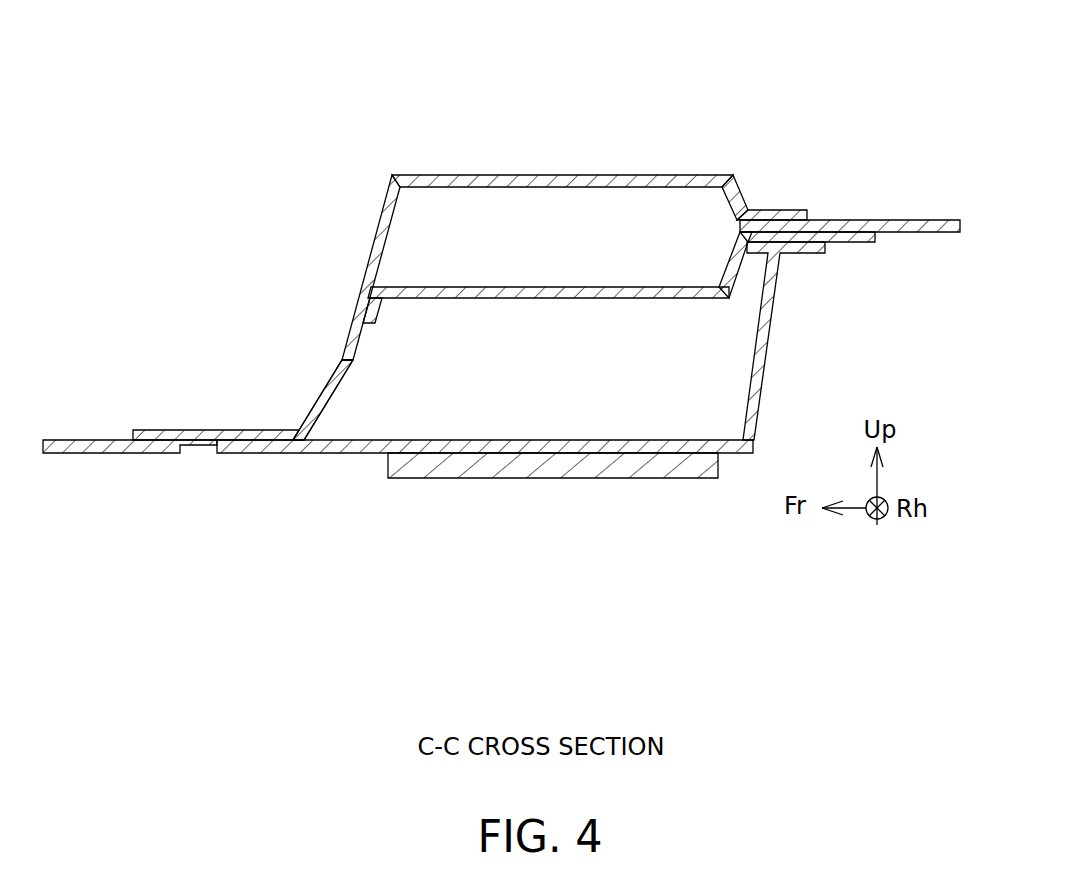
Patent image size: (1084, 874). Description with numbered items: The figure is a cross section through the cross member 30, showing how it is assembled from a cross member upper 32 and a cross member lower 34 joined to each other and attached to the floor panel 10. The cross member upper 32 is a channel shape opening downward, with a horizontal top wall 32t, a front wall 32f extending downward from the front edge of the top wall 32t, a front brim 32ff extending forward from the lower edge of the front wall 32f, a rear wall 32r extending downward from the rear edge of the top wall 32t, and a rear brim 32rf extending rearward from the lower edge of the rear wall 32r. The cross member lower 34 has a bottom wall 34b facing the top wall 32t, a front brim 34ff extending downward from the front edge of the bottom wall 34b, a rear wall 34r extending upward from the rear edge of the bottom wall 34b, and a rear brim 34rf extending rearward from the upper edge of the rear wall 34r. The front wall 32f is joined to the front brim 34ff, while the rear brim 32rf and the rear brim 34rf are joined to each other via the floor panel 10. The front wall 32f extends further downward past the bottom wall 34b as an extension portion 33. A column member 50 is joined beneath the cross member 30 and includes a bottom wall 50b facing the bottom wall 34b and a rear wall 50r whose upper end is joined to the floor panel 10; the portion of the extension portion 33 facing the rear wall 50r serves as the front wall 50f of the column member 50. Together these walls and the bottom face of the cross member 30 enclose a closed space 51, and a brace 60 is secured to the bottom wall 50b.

The floor panel 10 is at (903, 220).
The cross member 30 is at (504, 327).
The cross member upper 32 is at (486, 258).
The top wall 32t is at (557, 175).
The front wall 32f is at (377, 233).
The rear wall 32r is at (742, 196).
The front brim 32ff is at (190, 430).
The rear brim 32rf is at (788, 210).
The extension portion 33 is at (332, 368).
The cross member lower 34 is at (619, 338).
The bottom wall 34b is at (605, 298).
The front brim 34ff is at (382, 312).
The rear wall 34r is at (770, 330).
The rear brim 34rf is at (807, 284).
The column member 50 is at (523, 439).
The bottom wall 50b is at (338, 455).
The front wall 50f is at (332, 368).
The rear wall 50r is at (755, 443).
The closed space 51 is at (511, 404).
The brace 60 is at (575, 480).